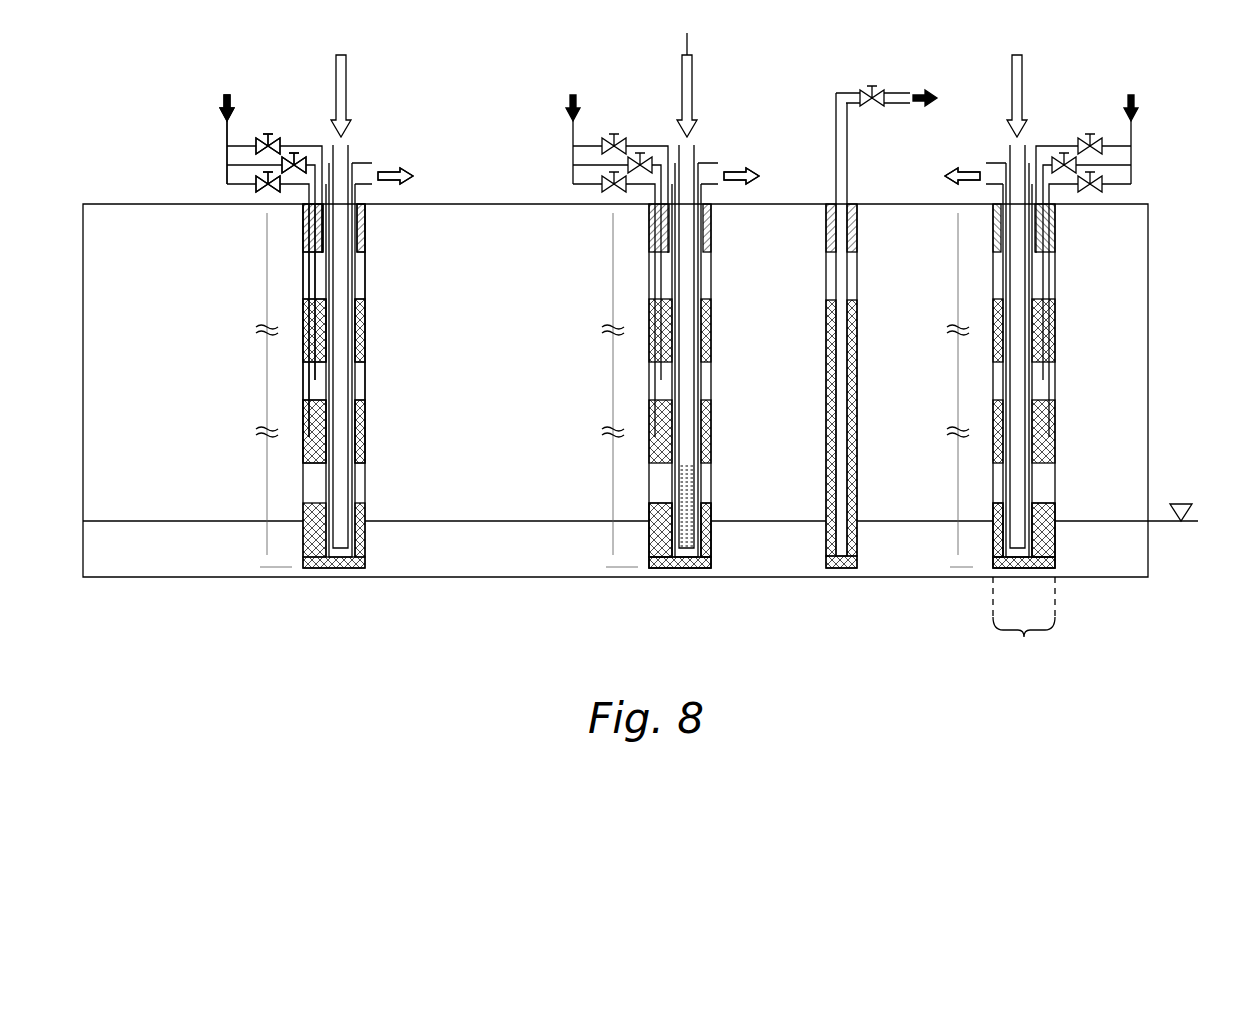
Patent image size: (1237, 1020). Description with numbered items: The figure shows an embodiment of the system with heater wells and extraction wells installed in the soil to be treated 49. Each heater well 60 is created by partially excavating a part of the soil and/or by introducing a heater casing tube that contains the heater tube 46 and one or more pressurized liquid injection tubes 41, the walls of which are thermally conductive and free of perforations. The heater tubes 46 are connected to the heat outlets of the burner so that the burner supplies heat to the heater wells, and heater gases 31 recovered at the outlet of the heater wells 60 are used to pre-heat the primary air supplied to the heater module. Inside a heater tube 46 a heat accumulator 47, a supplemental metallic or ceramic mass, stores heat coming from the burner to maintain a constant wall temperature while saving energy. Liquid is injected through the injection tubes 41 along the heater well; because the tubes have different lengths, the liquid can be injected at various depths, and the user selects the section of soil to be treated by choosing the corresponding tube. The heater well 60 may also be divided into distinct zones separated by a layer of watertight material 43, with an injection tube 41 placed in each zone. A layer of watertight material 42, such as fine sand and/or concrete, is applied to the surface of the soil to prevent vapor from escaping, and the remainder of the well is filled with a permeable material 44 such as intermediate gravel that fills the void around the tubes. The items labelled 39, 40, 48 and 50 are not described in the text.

The heater gases 31 is at (386, 166).
The treatment fluid supply 39 is at (227, 95).
The valves 40 is at (287, 119).
The pressurized liquid injection tube 41 is at (320, 289).
The layer of watertight material 42 is at (365, 228).
The layer of watertight material 43 is at (365, 272).
The permeable material 44 is at (365, 326).
The heater tube 46 is at (673, 548).
The heat accumulator 47 is at (688, 540).
The extraction well 48 is at (842, 548).
The soil to be treated 49 is at (1125, 355).
The groundwater 50 is at (1125, 553).
The heater well 60 is at (1024, 621).